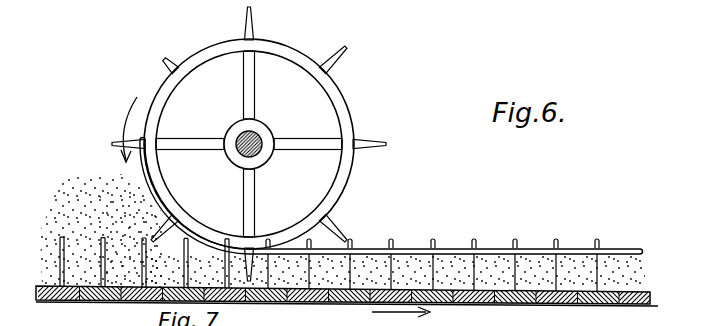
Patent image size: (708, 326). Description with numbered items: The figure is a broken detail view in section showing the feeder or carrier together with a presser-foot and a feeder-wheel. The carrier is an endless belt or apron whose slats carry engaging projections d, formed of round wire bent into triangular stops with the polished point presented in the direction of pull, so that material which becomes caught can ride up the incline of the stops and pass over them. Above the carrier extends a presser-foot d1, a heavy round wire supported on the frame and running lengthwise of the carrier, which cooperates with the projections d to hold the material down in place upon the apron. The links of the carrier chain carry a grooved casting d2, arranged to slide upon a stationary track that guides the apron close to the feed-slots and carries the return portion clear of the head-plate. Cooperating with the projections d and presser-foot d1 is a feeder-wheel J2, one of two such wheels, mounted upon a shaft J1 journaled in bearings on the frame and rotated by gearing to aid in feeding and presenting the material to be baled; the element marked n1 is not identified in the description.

The shaft J1 is at (258, 139).
The feeder-wheel J2 is at (335, 104).
The engaging projections d is at (60, 246).
The presser-foot d1 is at (367, 250).
The grooved casting d2 is at (325, 304).
The conveyor n1 is at (343, 304).